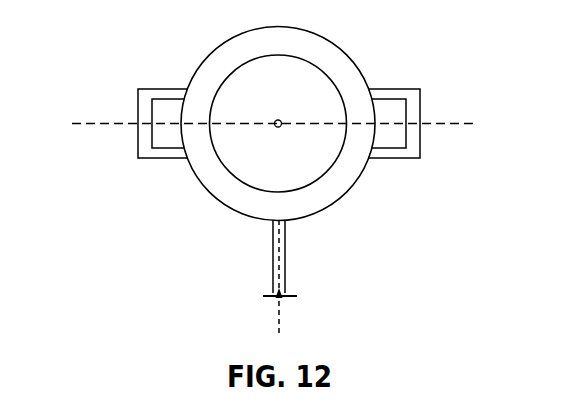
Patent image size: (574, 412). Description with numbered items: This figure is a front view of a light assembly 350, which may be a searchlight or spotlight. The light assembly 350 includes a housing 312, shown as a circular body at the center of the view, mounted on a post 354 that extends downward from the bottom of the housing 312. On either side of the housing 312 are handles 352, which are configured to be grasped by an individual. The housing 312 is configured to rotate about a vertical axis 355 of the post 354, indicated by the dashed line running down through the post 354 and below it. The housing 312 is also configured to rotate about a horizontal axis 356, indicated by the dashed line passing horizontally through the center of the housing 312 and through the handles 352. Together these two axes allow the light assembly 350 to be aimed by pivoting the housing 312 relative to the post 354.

The housing 312 is at (352, 185).
The light assembly 350 is at (413, 64).
The handles 352 is at (138, 142).
The post 354 is at (286, 235).
The vertical axis 355 is at (281, 312).
The horizontal axis 356 is at (110, 126).